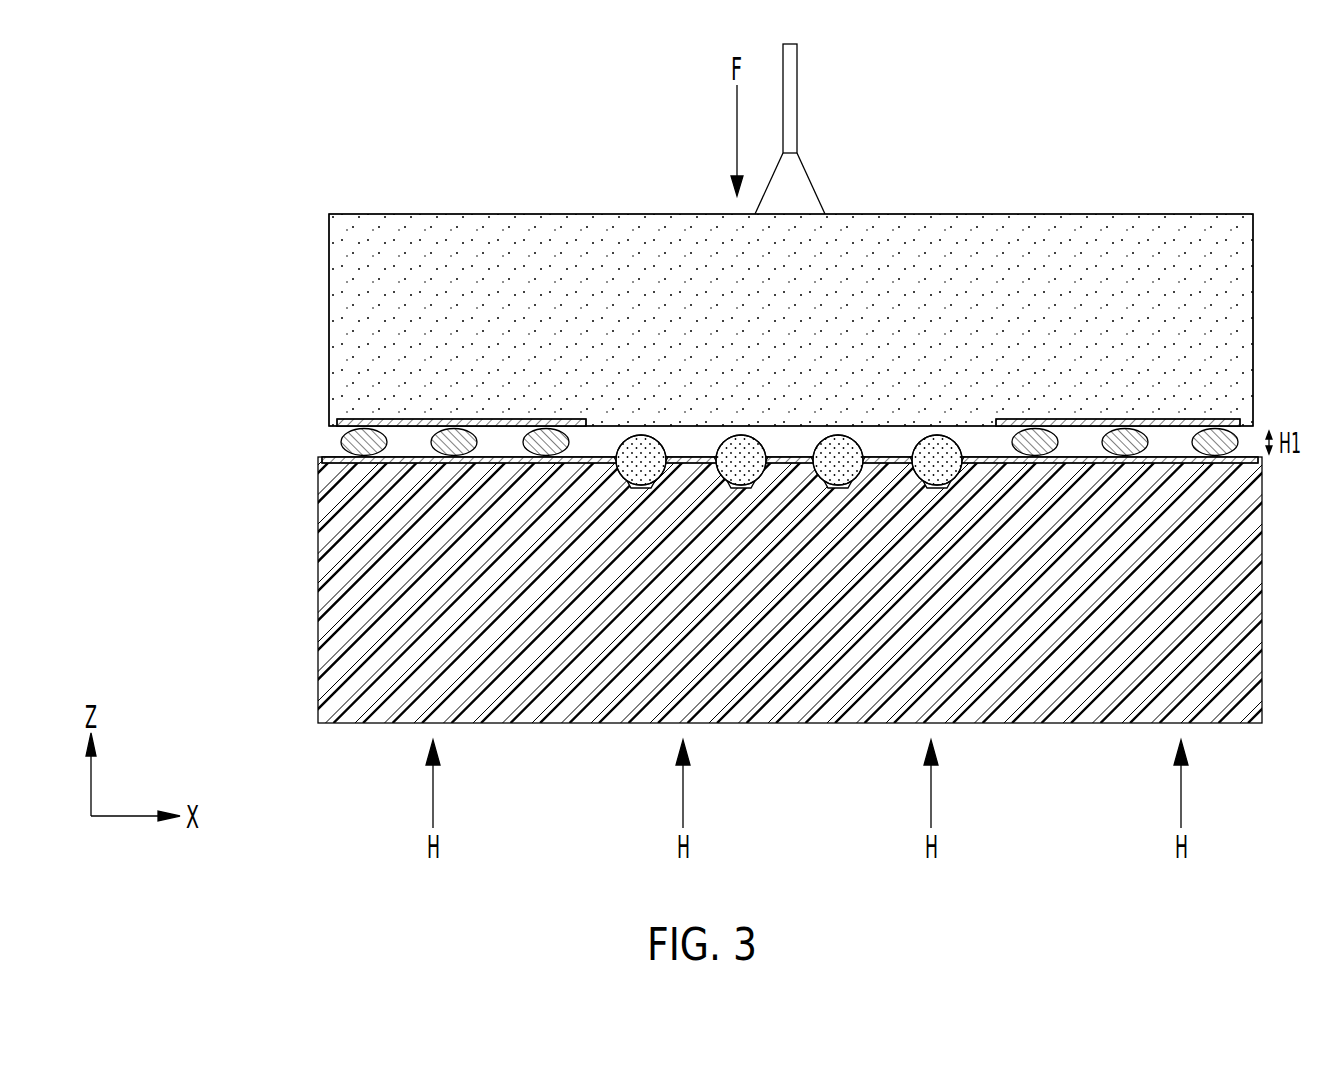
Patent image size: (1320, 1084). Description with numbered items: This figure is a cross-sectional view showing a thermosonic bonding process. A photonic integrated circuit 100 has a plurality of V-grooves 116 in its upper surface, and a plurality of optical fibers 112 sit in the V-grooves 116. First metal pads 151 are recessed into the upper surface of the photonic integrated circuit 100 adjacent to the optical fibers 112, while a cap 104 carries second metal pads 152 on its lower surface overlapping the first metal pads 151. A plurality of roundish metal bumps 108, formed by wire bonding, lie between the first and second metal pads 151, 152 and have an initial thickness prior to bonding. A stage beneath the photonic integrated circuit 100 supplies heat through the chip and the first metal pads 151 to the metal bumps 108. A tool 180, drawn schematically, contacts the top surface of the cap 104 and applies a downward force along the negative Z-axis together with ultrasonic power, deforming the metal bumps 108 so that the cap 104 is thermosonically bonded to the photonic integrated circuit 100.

The photonic integrated circuit 100 is at (1243, 595).
The cap 104 is at (1243, 332).
The metal bumps 108 is at (352, 448).
The optical fibers 112 is at (719, 611).
The V-grooves 116 is at (789, 618).
The first metal pads 151 is at (320, 462).
The second metal pads 152 is at (342, 423).
The tool 180 is at (799, 155).